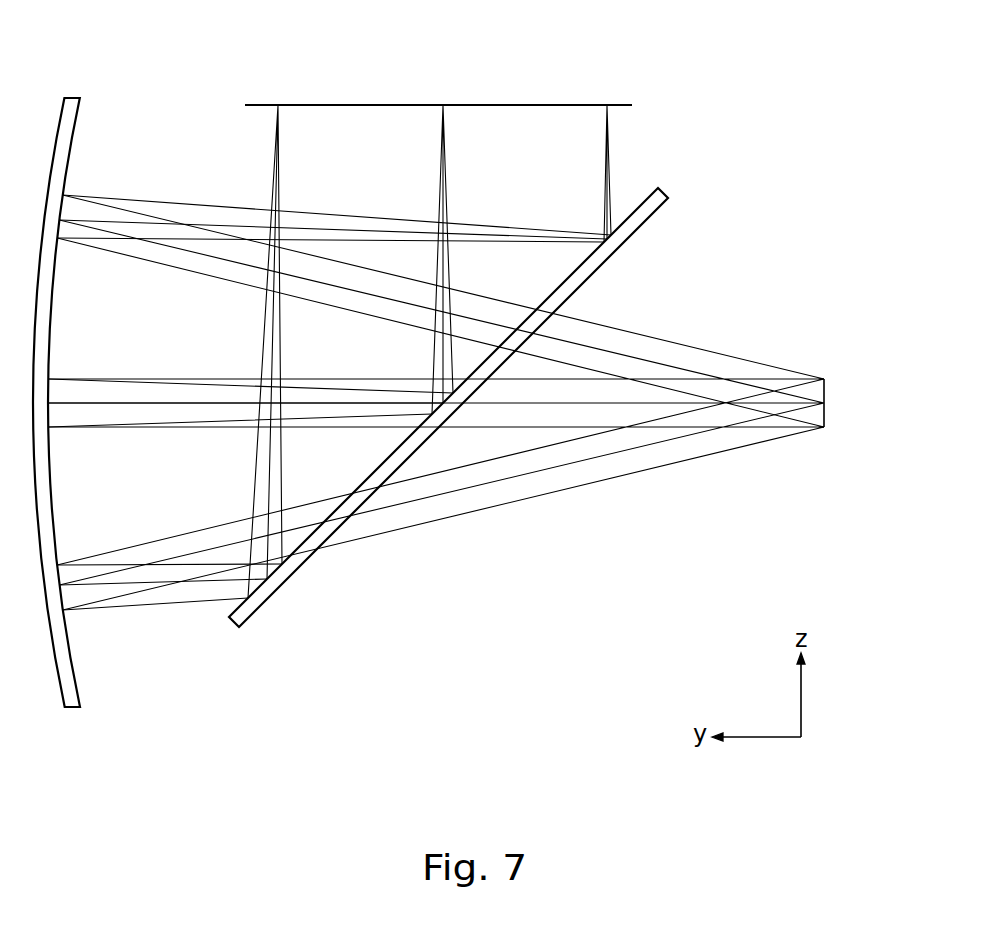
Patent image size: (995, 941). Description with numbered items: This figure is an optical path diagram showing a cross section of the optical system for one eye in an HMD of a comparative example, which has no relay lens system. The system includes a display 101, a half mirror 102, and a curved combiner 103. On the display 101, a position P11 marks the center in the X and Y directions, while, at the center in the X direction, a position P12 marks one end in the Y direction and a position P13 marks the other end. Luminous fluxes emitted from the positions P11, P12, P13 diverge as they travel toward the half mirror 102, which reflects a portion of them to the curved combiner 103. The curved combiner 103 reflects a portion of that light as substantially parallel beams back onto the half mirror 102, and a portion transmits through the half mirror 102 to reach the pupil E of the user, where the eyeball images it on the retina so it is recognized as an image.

The display 101 is at (518, 103).
The half mirror 102 is at (663, 190).
The curved combiner 103 is at (73, 97).
The pupil E is at (826, 410).
The position P11 is at (443, 104).
The position P12 is at (607, 104).
The position P13 is at (277, 104).